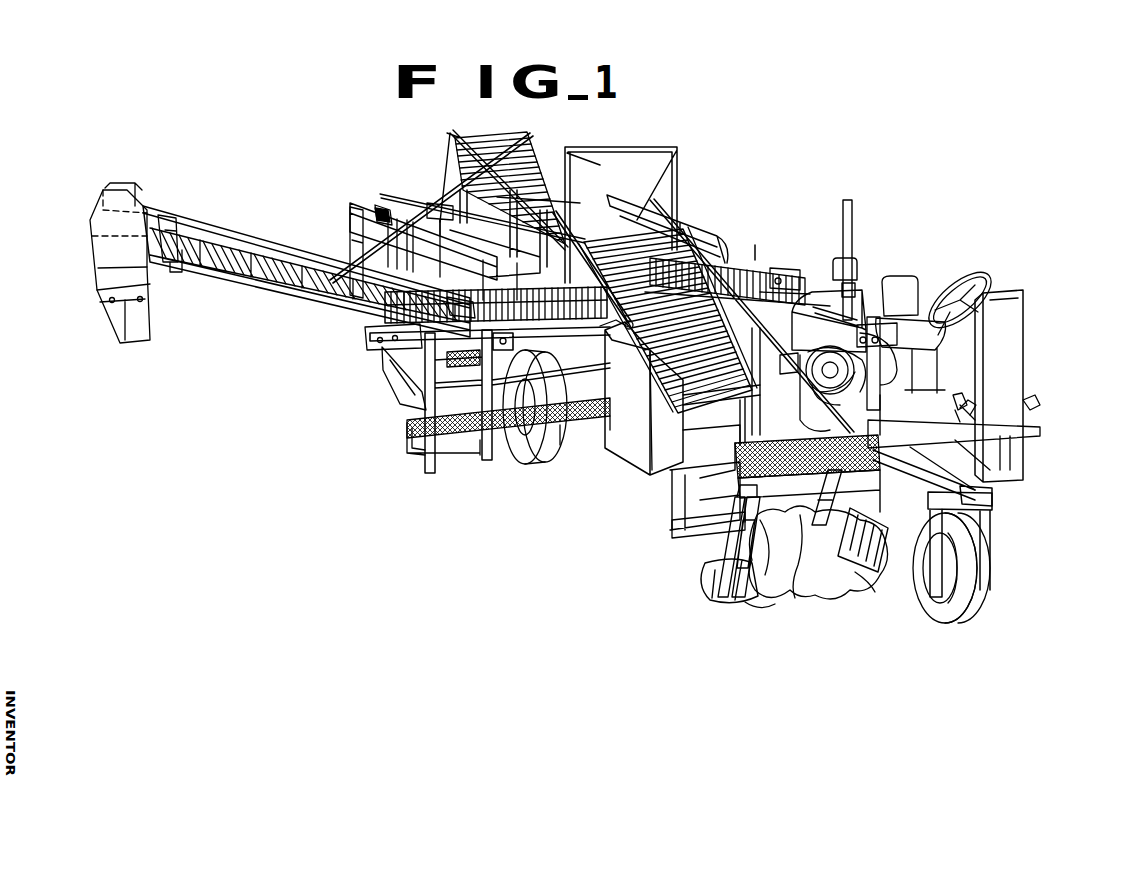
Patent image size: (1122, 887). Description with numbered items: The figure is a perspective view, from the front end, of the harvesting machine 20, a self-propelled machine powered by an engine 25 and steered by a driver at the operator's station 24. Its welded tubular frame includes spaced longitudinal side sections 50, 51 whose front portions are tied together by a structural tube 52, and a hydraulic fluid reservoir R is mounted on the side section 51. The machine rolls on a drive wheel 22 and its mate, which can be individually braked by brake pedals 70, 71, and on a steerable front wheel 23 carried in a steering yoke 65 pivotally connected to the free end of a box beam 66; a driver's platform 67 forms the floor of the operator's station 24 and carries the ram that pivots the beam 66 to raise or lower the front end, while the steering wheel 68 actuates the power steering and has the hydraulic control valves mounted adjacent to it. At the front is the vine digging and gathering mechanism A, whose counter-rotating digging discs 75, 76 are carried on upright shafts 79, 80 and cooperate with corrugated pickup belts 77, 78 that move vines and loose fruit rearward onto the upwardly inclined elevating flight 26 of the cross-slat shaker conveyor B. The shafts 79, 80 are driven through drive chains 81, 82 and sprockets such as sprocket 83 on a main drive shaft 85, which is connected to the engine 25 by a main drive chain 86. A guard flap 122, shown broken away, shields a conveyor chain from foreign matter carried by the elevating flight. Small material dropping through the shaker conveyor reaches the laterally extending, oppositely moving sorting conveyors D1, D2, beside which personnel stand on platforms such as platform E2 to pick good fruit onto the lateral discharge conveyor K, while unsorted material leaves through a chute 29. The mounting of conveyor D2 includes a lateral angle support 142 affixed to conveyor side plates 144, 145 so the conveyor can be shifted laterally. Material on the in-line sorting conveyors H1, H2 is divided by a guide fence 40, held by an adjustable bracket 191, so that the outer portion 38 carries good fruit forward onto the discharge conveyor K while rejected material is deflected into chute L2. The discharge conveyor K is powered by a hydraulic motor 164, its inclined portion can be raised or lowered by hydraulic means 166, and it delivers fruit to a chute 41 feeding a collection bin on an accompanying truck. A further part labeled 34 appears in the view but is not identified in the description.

The harvesting machine 20 is at (742, 183).
The drive wheel 22 is at (541, 460).
The steerable front wheel 23 is at (980, 569).
The operator's station 24 is at (1011, 293).
The engine 25 is at (862, 305).
The elevating flight 26 is at (736, 256).
The chute 29 is at (398, 388).
The elevating conveyor 34 is at (495, 136).
The outer portion 38 is at (393, 240).
The guide fence 40 is at (406, 212).
The chute 41 is at (90, 245).
The side section 50 is at (767, 275).
The side section 51 is at (667, 514).
The structural tube 52 is at (672, 518).
The steering yoke 65 is at (995, 524).
The box beam 66 is at (966, 481).
The driver's platform 67 is at (935, 400).
The steering wheel 68 is at (962, 281).
The brake pedal 70 is at (1036, 400).
The brake pedal 71 is at (964, 406).
The digging disc 75 is at (866, 576).
The digging disc 76 is at (747, 598).
The pickup belt 77 is at (870, 570).
The pickup belt 78 is at (708, 574).
The upright shaft 79 is at (838, 508).
The upright shaft 80 is at (722, 534).
The drive chain 81 is at (830, 420).
The drive chain 82 is at (683, 411).
The sprocket 83 is at (862, 398).
The main drive shaft 85 is at (688, 441).
The main drive chain 86 is at (783, 370).
The guard flap 122 is at (660, 376).
The lateral angle support 142 is at (604, 331).
The conveyor side plate 144 is at (384, 368).
The conveyor side plate 145 is at (372, 324).
The hydraulic motor 164 is at (176, 262).
The hydraulic means 166 is at (530, 150).
The adjustable bracket 191 is at (428, 214).
The vine digging and gathering mechanism A is at (797, 586).
The shaker conveyor B is at (722, 240).
The sorting conveyor D1 is at (820, 287).
The sorting conveyor D2 is at (366, 340).
The platform E2 is at (402, 428).
The sorting conveyor H1 is at (686, 225).
The sorting conveyor H2 is at (372, 204).
The lateral discharge conveyor K is at (180, 205).
The chute L2 is at (580, 200).
The hydraulic fluid reservoir R is at (628, 466).